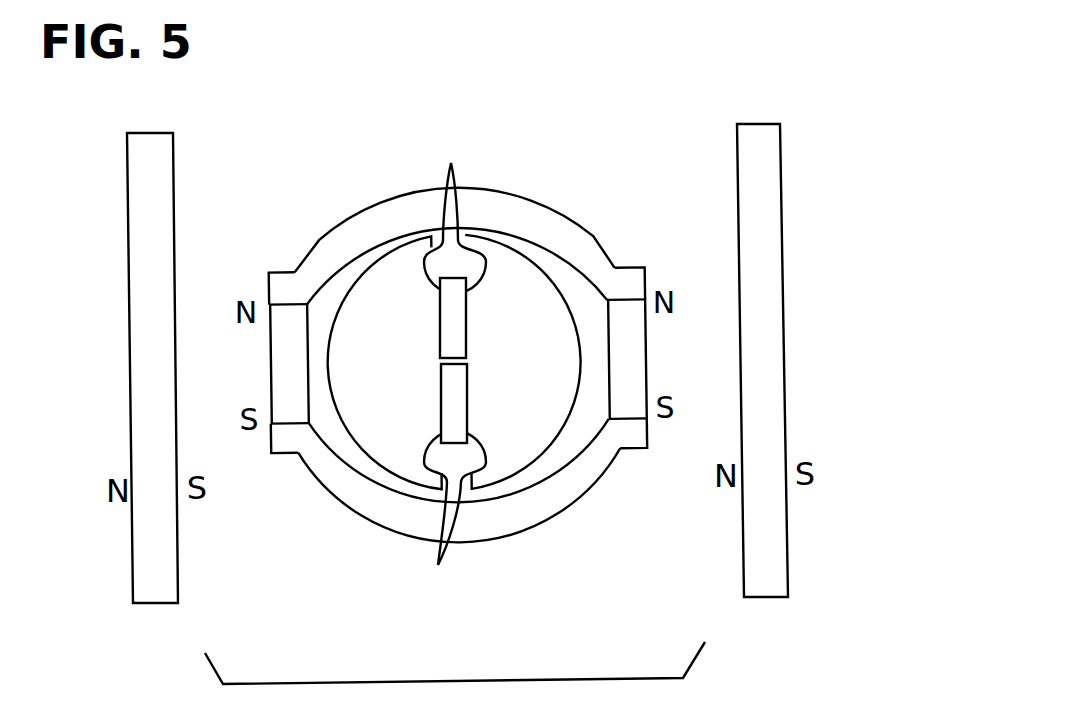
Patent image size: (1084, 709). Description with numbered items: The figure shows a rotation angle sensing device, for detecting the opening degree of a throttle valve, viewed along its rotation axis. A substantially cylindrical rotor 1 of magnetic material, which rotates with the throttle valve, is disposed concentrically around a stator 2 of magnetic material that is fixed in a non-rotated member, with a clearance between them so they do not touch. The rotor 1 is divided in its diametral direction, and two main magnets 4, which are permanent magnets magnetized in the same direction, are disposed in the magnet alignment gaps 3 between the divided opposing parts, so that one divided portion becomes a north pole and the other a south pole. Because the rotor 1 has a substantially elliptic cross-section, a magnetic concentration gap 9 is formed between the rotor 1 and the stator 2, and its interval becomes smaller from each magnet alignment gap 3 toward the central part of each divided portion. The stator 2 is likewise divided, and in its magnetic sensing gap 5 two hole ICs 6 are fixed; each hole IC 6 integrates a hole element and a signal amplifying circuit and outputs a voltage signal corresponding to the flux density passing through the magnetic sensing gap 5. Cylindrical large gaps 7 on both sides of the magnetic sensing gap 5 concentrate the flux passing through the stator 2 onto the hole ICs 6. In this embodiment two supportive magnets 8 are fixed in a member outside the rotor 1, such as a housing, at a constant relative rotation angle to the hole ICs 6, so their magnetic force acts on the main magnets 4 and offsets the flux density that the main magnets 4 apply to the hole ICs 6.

The rotor 1 is at (545, 209).
The stator 2 is at (565, 288).
The magnet alignment gap 3 is at (297, 305).
The main magnet 4 is at (280, 363).
The magnetic sensing gap 5 is at (445, 383).
The hole IC 6 is at (460, 325).
The large gap 7 is at (455, 364).
The supportive magnet 8 is at (174, 178).
The magnetic concentration gap 9 is at (548, 262).